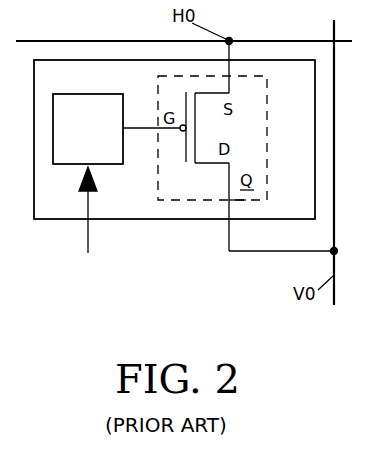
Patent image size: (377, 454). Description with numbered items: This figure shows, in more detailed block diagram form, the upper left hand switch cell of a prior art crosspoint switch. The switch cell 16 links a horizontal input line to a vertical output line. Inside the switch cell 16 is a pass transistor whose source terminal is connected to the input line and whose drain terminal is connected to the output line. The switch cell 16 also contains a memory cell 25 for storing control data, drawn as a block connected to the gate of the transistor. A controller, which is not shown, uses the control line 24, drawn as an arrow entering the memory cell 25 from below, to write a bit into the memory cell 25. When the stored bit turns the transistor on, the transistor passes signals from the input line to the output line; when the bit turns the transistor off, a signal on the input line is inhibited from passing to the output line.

The switch cell 16 is at (304, 209).
The memory cell 25 is at (98, 142).
The control line 24 is at (89, 238).